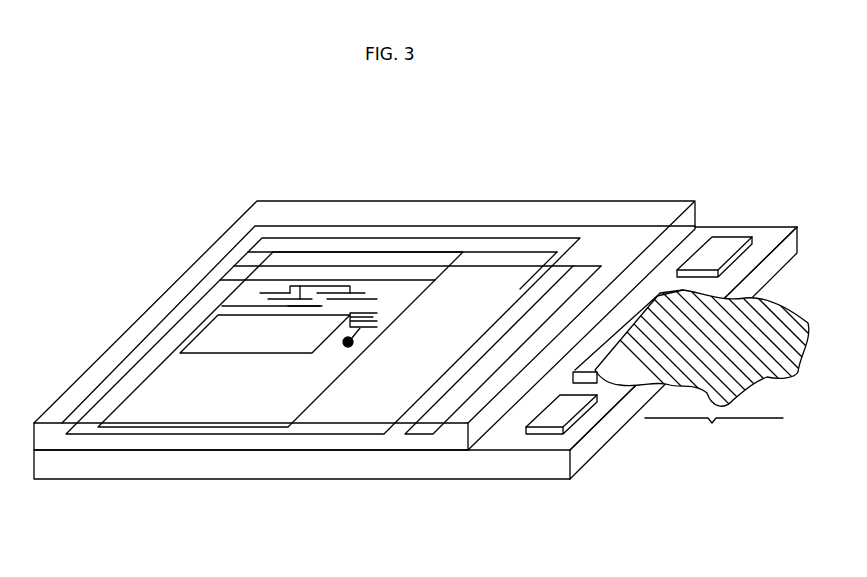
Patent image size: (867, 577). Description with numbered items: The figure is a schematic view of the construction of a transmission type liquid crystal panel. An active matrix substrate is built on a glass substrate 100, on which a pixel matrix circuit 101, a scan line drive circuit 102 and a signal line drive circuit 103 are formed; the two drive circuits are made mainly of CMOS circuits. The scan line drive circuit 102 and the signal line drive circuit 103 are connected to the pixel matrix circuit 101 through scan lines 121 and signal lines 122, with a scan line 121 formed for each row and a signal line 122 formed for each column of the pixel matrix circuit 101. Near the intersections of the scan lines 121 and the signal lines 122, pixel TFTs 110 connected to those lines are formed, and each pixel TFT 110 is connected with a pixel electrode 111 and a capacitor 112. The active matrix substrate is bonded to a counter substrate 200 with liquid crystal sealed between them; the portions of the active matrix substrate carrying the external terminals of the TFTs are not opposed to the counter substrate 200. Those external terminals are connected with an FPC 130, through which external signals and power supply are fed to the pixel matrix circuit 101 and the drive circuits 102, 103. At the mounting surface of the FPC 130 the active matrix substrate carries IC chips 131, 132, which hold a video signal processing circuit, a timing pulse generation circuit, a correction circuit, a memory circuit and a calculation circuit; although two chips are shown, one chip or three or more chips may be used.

The glass substrate 100 is at (527, 468).
The pixel matrix circuit 101 is at (260, 427).
The scan line drive circuit 102 is at (270, 225).
The signal line drive circuit 103 is at (590, 262).
The pixel TFT 110 is at (320, 292).
The pixel electrode 111 is at (218, 342).
The capacitor 112 is at (380, 305).
The scan line 121 is at (497, 283).
The signal line 122 is at (250, 272).
The FPC (flexible printed circuit) 130 is at (713, 365).
The IC chip 131 is at (593, 408).
The IC chip 132 is at (735, 237).
The counter substrate 200 is at (690, 200).